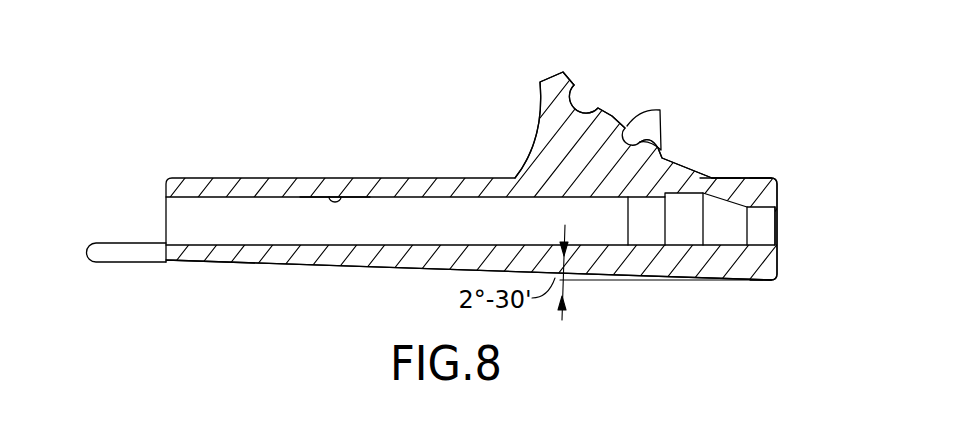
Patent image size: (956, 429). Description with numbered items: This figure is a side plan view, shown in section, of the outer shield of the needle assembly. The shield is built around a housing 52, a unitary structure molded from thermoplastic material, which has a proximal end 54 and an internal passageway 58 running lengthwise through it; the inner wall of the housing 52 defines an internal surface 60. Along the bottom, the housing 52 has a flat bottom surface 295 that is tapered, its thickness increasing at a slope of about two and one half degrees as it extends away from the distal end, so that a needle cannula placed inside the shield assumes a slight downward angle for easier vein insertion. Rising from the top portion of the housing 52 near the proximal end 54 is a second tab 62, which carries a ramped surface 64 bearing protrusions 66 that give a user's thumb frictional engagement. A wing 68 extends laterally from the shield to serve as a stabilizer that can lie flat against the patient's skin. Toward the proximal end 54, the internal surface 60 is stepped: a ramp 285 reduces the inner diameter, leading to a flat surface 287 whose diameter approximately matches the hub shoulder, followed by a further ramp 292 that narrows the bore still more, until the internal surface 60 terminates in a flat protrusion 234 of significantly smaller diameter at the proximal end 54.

The housing 52 is at (377, 178).
The proximal end 54 is at (772, 180).
The internal passageway 58 is at (173, 215).
The internal surface 60 is at (335, 197).
The second tab 62 is at (562, 72).
The ramped surface 64 is at (597, 112).
The protrusions 66 is at (660, 110).
The wings 68 is at (90, 248).
The flat protrusion 234 is at (777, 210).
The ramp 285 is at (657, 168).
The flat surface 287 is at (707, 178).
The ramp 292 is at (750, 180).
The flat bottom surface 295 is at (407, 275).